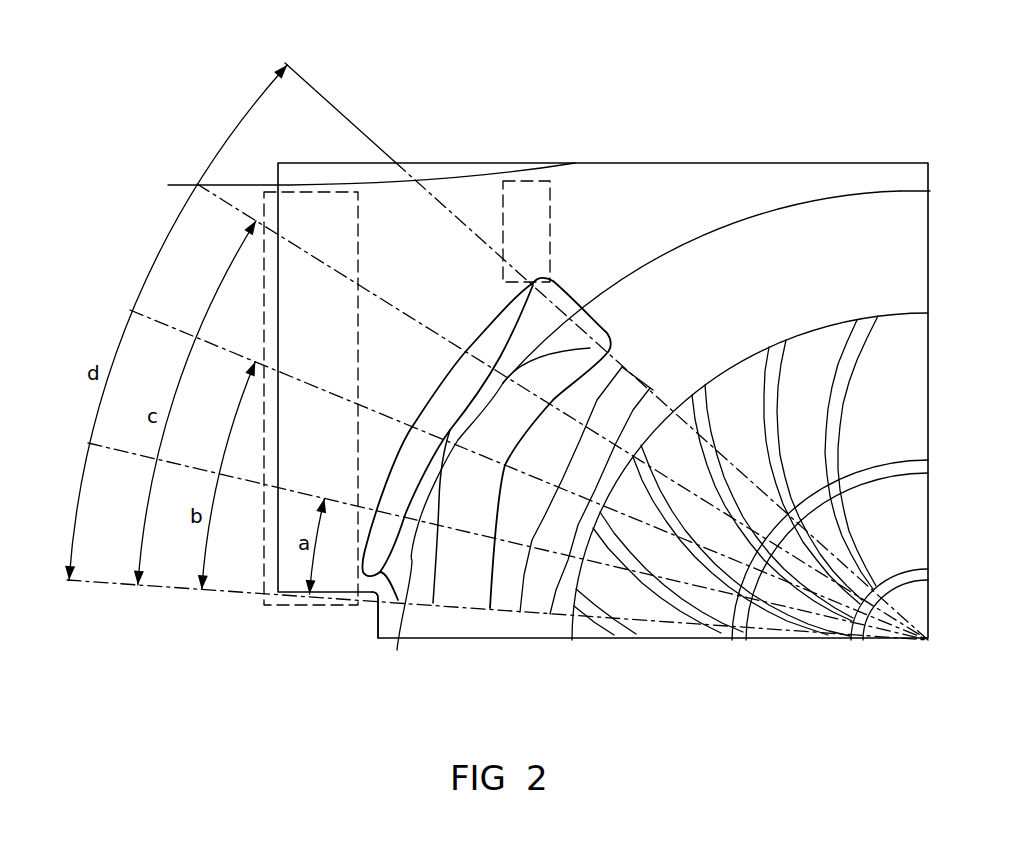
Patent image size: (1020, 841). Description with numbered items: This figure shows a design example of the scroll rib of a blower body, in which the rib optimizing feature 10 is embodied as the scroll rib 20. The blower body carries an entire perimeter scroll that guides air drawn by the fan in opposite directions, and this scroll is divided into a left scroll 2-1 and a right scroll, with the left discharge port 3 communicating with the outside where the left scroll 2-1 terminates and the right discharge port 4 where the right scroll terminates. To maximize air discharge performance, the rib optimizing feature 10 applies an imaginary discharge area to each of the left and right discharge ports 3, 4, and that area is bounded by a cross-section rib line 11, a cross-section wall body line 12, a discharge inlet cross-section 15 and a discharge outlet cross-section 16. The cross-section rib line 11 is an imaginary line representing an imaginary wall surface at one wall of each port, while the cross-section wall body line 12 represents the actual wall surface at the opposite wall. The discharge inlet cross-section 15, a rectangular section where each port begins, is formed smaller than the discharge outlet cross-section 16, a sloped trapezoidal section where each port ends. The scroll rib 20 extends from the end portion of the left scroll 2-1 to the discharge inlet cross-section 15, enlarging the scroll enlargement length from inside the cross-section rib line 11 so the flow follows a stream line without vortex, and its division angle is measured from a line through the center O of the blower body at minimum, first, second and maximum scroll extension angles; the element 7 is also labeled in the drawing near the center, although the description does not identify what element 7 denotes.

The rib optimizing feature 10 is at (138, 192).
The cross-section wall body line 12 is at (230, 184).
The discharge outlet cross-section 16 is at (325, 192).
The left discharge port 3 is at (603, 349).
The right discharge port 4 is at (478, 162).
The discharge inlet cross-section 15 is at (540, 178).
The scroll rib 20 is at (557, 317).
The left scroll 2-1 is at (507, 583).
The hub 7 is at (797, 612).
The cross-section rib line 11 is at (398, 652).